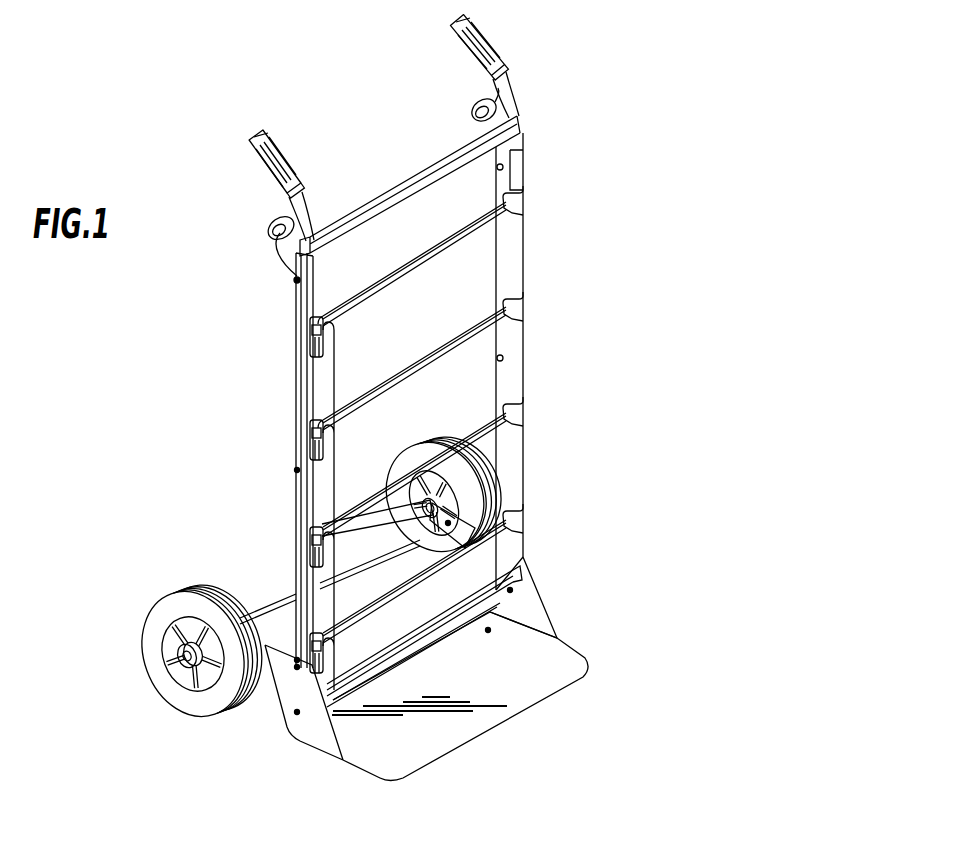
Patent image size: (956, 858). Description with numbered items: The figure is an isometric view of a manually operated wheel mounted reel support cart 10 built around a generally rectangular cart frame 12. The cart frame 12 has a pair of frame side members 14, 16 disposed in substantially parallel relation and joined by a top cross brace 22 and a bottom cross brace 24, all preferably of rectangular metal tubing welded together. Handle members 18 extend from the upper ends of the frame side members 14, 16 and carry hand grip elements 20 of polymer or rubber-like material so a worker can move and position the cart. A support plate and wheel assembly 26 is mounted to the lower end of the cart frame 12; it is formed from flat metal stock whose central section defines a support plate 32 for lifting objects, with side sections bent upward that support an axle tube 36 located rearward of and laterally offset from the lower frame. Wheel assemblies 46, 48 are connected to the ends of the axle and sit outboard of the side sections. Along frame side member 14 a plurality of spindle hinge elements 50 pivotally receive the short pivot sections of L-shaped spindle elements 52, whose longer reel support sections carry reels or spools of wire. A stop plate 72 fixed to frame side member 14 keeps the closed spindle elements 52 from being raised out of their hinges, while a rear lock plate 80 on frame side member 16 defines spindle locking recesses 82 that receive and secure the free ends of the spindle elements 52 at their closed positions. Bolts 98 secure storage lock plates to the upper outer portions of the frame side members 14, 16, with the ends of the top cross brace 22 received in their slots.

The manually operated wheel mounted reel support cart 10 is at (595, 142).
The cart frame 12 is at (294, 367).
The frame side member 14 is at (293, 508).
The frame side member 16 is at (522, 147).
The handle member 18 is at (512, 98).
The hand grip element 20 is at (265, 170).
The top cross brace 22 is at (397, 185).
The bottom cross brace 24 is at (497, 606).
The support plate and wheel assembly 26 is at (304, 752).
The support plate 32 is at (505, 688).
The axle tube 36 is at (262, 588).
The wheel assembly 46 is at (183, 687).
The wheel assembly 48 is at (482, 465).
The spindle hinge element 50 is at (317, 440).
The spindle element 52 is at (433, 254).
The stop plate 72 is at (323, 477).
The rear lock plate 80 is at (515, 365).
The spindle locking recess 82 is at (523, 306).
The bolt 98 is at (294, 281).